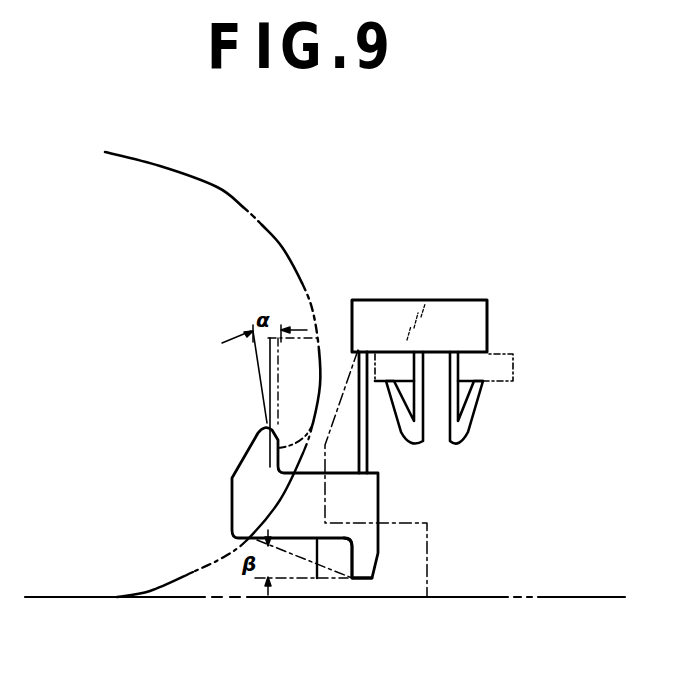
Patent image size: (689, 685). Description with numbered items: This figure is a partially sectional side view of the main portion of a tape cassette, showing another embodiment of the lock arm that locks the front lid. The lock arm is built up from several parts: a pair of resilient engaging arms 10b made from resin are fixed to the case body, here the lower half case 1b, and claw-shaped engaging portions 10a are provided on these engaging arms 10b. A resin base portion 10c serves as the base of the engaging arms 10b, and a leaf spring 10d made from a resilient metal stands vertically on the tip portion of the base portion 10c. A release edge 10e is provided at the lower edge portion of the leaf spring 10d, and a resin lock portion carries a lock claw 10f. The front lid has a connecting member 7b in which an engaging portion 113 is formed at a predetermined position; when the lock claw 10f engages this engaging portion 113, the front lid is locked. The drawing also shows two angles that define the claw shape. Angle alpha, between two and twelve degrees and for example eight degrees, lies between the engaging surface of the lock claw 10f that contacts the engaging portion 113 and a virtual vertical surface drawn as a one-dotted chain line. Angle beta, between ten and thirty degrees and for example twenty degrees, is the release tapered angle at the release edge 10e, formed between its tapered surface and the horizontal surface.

The lower half case 1b is at (492, 565).
The connecting member 7b is at (193, 205).
The engaging portion 113 is at (290, 395).
The base portion 10c is at (448, 318).
The leaf spring 10d is at (360, 393).
The engaging arms 10b is at (466, 367).
The engaging portions 10a is at (481, 408).
The lock claw 10f is at (250, 460).
The release edge 10e is at (336, 560).